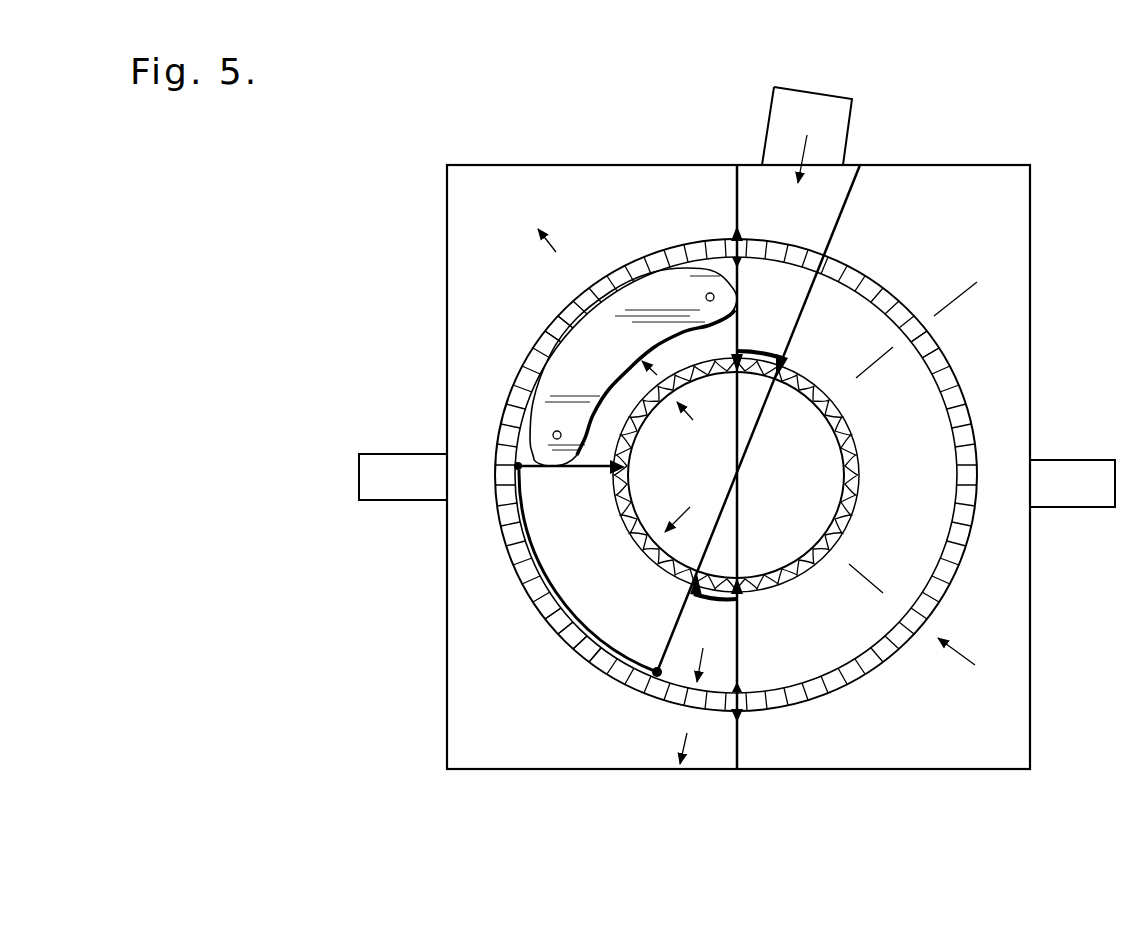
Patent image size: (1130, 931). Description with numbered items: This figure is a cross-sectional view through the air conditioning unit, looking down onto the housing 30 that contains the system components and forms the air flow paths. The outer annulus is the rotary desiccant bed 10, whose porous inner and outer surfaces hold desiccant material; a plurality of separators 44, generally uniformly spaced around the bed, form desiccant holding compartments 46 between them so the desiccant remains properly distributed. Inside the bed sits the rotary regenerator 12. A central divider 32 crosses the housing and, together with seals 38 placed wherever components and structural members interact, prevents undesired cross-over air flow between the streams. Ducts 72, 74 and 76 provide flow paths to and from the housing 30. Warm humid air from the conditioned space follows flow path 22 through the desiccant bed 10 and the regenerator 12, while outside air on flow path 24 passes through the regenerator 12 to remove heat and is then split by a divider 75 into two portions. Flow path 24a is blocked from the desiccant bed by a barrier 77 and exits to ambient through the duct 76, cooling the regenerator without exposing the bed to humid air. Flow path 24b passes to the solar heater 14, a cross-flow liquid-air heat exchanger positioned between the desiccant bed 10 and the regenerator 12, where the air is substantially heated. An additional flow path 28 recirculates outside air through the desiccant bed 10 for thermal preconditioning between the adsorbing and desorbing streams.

The rotary desiccant bed 10 is at (953, 380).
The rotary regenerator 12 is at (770, 590).
The solar heater 14 is at (586, 355).
The flow path 22 is at (988, 478).
The flow path 24 is at (674, 477).
The flow path 24a is at (573, 577).
The flow path 24b is at (713, 357).
The flow path 28 is at (800, 292).
The housing 30 is at (440, 711).
The divider 32 is at (761, 421).
The seals 38 is at (825, 254).
The separators 44 is at (918, 327).
The desiccant holding compartments 46 is at (553, 330).
The duct 72 is at (1084, 462).
The duct 74 is at (848, 138).
The divider 75 is at (523, 470).
The duct 76 is at (393, 494).
The barrier 77 is at (598, 647).